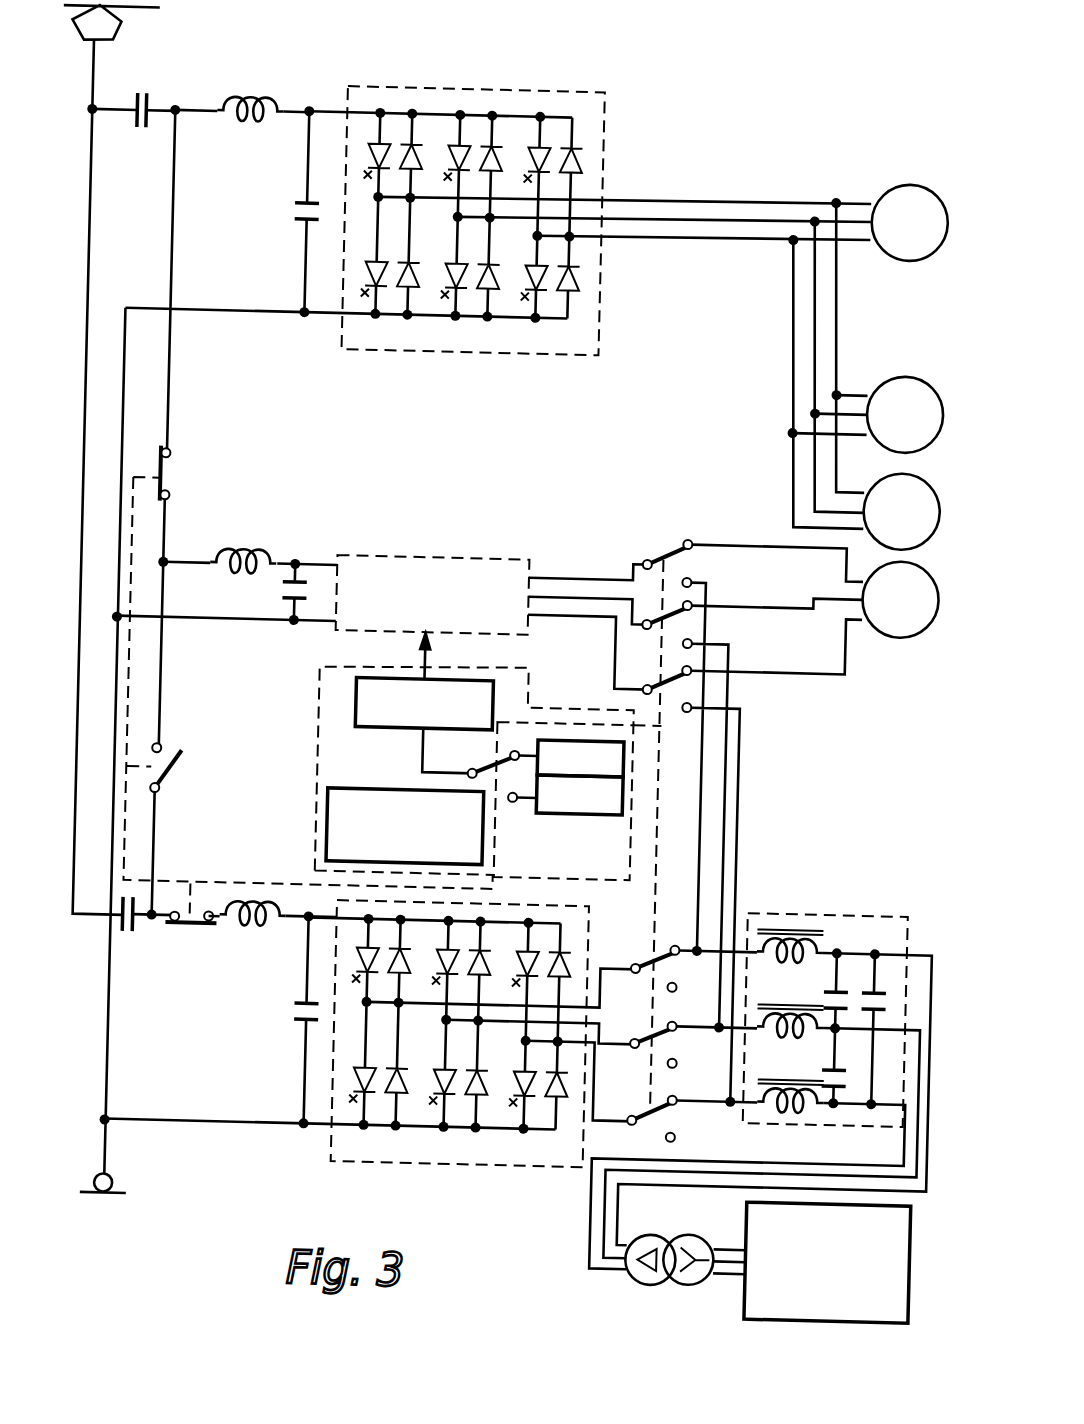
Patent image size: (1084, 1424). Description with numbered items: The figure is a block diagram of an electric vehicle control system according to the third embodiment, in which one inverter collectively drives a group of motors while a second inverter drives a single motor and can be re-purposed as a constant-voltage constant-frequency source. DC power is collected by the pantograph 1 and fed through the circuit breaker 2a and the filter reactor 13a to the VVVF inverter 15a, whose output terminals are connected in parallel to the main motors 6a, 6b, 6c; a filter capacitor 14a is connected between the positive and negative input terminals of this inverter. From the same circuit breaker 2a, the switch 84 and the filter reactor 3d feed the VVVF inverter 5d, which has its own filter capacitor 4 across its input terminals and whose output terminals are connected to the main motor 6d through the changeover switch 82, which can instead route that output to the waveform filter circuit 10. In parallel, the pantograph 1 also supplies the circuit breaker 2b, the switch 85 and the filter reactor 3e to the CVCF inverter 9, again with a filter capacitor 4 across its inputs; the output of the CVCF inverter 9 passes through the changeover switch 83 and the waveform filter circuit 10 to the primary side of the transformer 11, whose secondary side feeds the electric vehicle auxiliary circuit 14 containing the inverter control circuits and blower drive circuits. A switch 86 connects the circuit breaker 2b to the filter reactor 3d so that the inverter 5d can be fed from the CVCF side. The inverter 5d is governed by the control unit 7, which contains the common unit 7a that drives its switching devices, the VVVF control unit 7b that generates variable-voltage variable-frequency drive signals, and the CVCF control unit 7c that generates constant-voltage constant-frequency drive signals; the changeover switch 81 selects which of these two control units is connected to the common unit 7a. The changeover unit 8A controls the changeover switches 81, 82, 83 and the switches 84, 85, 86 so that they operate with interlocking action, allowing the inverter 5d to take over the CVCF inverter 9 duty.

The pantograph 1 is at (108, 32).
The circuit breaker 2a is at (130, 104).
The circuit breaker 2b is at (126, 944).
The filter reactor 3d is at (238, 558).
The filter reactor 3e is at (252, 936).
The filter capacitor 4 is at (281, 597).
The VVVF inverter 5d is at (483, 559).
The main motor 6a is at (882, 177).
The main motor 6b is at (889, 369).
The main motor 6c is at (872, 466).
The main motor 6d is at (895, 630).
The control unit 7 is at (316, 754).
The common unit 7a is at (393, 732).
The VVVF control unit 7b is at (587, 740).
The CVCF control unit 7c is at (583, 814).
The changeover unit 8A is at (329, 825).
The CVCF inverter 9 is at (339, 1147).
The waveform filter circuit 10 is at (842, 906).
The transformer 11 is at (692, 1232).
The filter reactor 13a is at (236, 107).
The electric vehicle auxiliary circuit 14 is at (760, 1291).
The filter capacitor 14a is at (281, 217).
The VVVF inverter 15a is at (545, 90).
The changeover switch 81 is at (489, 767).
The changeover switch 82 is at (656, 553).
The changeover switch 83 is at (650, 960).
The switch 84 is at (153, 459).
The switch 85 is at (193, 937).
The switch 86 is at (186, 766).